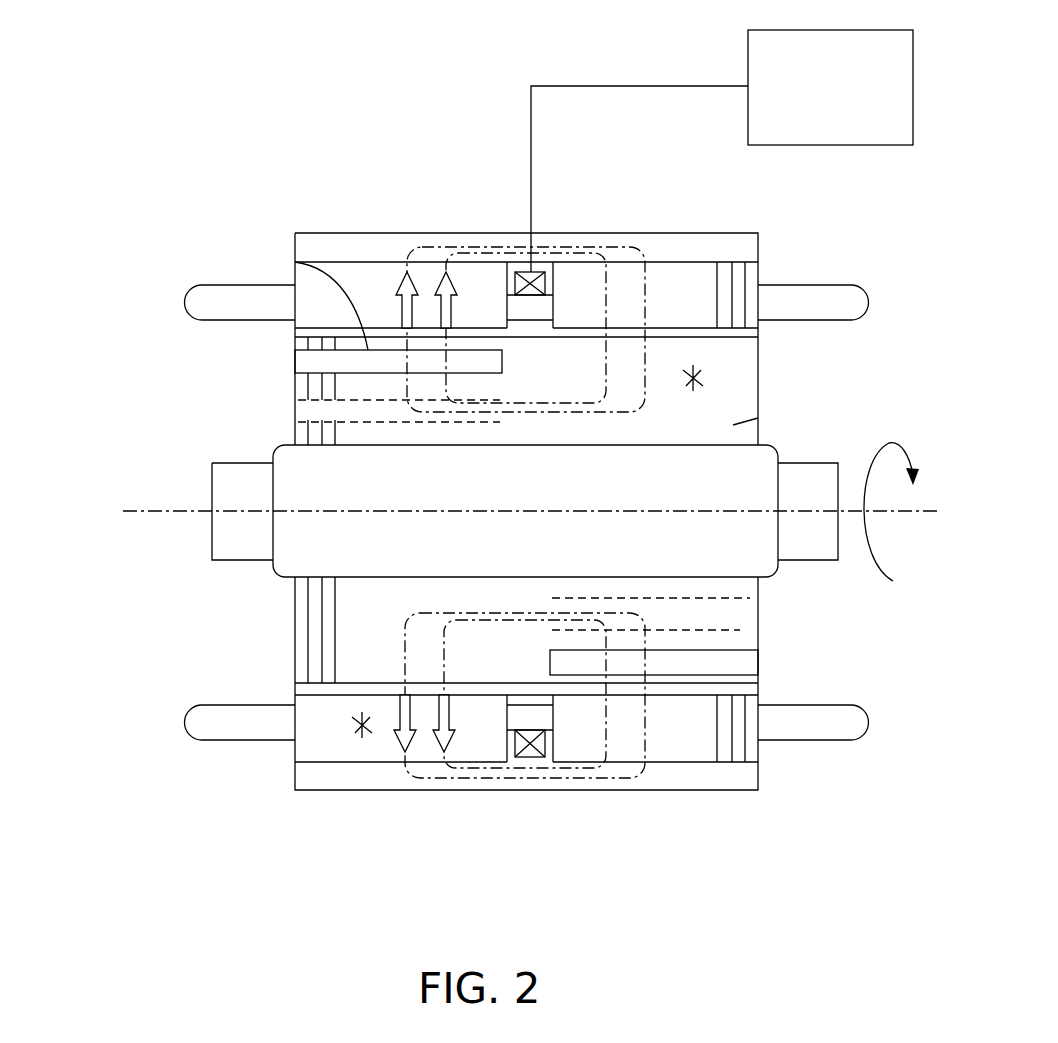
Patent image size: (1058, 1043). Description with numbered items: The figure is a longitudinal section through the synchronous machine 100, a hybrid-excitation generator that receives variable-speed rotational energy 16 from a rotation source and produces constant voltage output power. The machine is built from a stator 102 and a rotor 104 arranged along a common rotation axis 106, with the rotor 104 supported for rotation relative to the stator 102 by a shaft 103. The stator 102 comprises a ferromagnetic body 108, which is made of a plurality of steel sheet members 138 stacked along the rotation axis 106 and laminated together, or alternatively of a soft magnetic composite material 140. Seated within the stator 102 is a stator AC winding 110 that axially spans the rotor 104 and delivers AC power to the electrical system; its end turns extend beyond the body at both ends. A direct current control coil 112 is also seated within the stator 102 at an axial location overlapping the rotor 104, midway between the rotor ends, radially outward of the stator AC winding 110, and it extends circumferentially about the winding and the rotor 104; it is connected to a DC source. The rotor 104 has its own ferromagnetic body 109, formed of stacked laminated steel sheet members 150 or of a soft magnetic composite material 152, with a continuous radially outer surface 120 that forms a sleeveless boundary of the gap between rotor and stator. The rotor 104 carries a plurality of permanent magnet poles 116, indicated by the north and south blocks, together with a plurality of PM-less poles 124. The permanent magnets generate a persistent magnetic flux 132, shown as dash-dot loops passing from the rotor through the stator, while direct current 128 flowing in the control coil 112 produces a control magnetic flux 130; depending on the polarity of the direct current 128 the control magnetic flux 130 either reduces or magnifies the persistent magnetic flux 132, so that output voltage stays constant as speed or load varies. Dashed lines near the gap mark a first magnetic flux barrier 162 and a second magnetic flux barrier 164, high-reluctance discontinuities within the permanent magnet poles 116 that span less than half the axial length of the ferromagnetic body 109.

The synchronous machine 100 is at (310, 862).
The stator 102 is at (752, 214).
The shaft 103 is at (808, 545).
The rotor 104 is at (188, 578).
The rotation axis 106 is at (140, 510).
The ferromagnetic body 108 is at (315, 740).
The ferromagnetic body 109 is at (758, 418).
The stator AC winding 110 is at (805, 725).
The direct current control coil 112 is at (531, 760).
The permanent magnet poles 116 is at (295, 355).
The radially outer surface 120 is at (395, 692).
The PM-less poles 124 is at (730, 365).
The direct current 128 is at (505, 102).
The control magnetic flux 130 is at (603, 735).
The persistent magnetic flux 132 is at (642, 712).
The steel sheet members 138 is at (730, 740).
The soft magnetic composite material 140 is at (380, 735).
The steel sheet members 150 is at (295, 385).
The soft magnetic composite material 152 is at (698, 380).
The first magnetic flux barrier 162 is at (295, 415).
The second magnetic flux barrier 164 is at (295, 262).
The rotational energy 16 is at (897, 585).